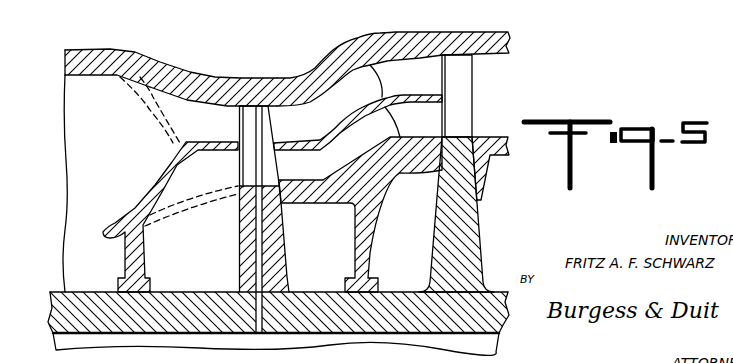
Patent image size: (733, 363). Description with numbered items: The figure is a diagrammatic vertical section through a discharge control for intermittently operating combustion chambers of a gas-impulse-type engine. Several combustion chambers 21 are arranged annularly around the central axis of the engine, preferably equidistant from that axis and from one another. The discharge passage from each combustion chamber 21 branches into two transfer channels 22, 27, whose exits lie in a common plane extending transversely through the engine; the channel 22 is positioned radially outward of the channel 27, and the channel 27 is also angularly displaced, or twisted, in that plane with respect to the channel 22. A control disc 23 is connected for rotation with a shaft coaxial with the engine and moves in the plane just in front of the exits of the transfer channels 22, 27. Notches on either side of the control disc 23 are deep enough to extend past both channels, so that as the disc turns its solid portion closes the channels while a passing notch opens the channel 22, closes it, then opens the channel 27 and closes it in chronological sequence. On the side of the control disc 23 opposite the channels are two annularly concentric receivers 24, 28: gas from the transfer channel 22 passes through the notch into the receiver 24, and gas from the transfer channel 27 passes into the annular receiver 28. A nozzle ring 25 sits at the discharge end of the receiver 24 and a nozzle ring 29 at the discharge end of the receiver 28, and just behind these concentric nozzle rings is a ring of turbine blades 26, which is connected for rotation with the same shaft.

The combustion chamber 21 is at (87, 100).
The transfer channel 22 is at (196, 100).
The control disc 23 is at (280, 232).
The receiver 24 is at (330, 100).
The nozzle ring 25 is at (418, 67).
The turbine blades 26 is at (458, 80).
The transfer channel 27 is at (193, 172).
The receiver 28 is at (315, 170).
The nozzle ring 29 is at (433, 118).